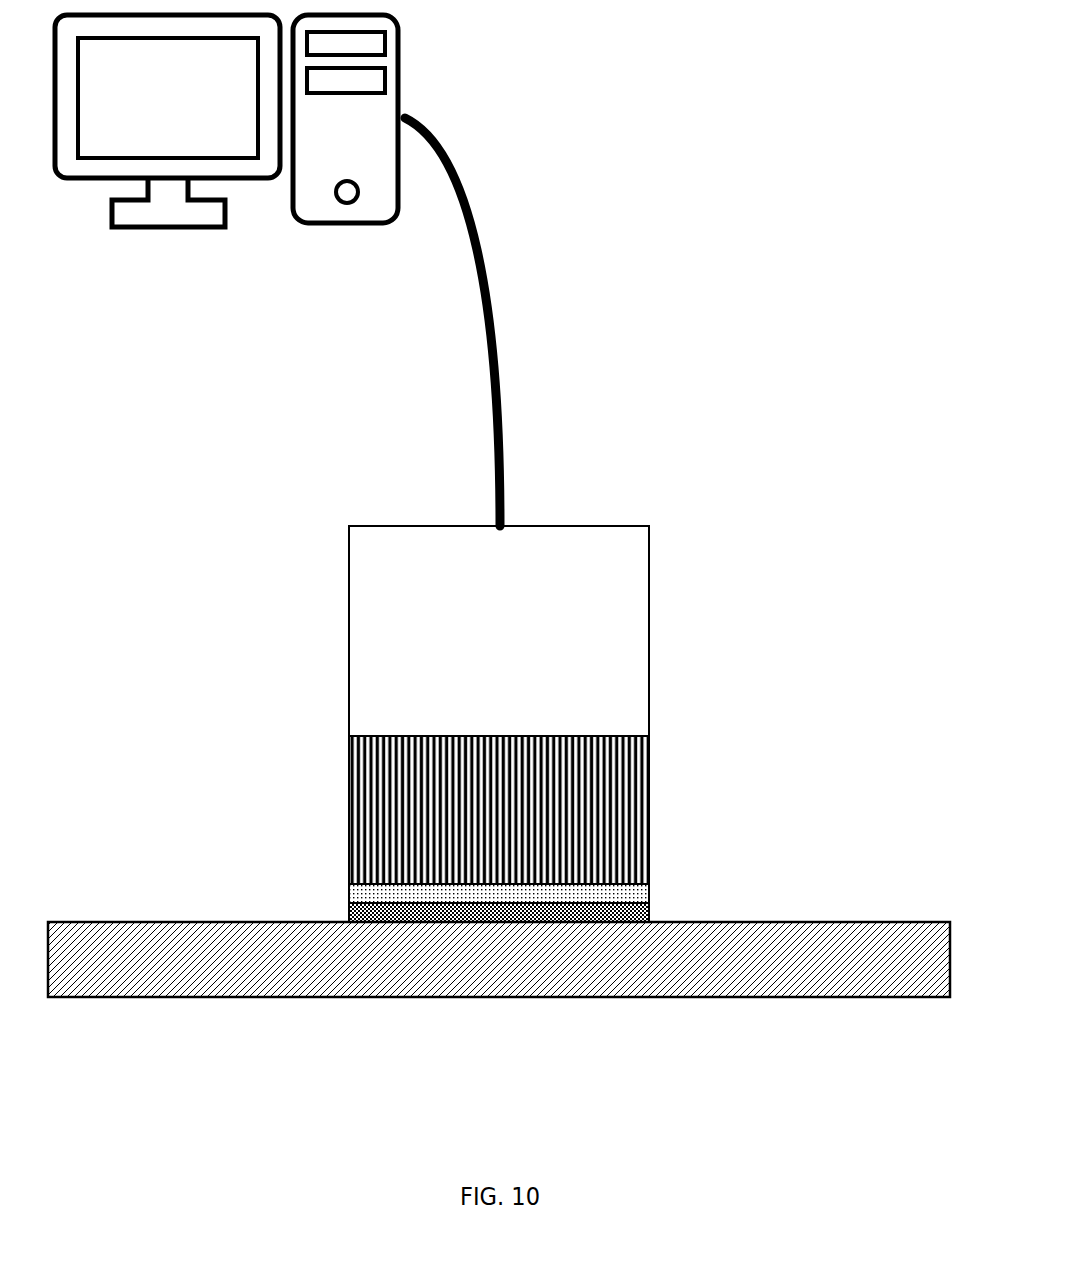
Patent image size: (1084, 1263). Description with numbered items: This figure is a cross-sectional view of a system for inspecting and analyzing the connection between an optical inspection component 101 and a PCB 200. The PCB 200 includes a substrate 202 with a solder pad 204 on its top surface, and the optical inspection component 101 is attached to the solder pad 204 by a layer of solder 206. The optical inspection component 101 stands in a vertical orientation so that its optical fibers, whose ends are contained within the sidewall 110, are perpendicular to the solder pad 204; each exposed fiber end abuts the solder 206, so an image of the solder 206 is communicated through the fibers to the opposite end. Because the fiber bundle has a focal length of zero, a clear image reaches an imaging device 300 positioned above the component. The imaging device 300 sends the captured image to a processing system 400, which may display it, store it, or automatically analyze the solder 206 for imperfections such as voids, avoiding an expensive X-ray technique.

The processing system 400 is at (226, 252).
The imaging device 300 is at (480, 658).
The optical inspection component 101 is at (415, 782).
The sidewall 110 is at (382, 782).
The PCB 200 is at (499, 938).
The substrate 202 is at (688, 958).
The solder pad 204 is at (650, 910).
The solder 206 is at (650, 888).